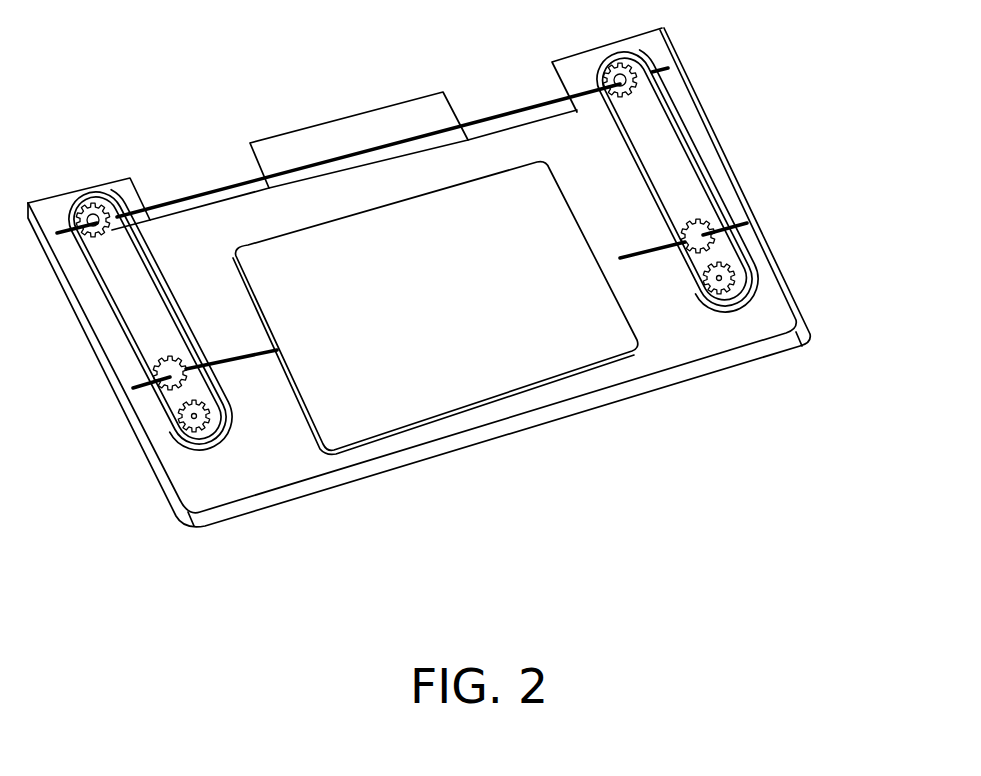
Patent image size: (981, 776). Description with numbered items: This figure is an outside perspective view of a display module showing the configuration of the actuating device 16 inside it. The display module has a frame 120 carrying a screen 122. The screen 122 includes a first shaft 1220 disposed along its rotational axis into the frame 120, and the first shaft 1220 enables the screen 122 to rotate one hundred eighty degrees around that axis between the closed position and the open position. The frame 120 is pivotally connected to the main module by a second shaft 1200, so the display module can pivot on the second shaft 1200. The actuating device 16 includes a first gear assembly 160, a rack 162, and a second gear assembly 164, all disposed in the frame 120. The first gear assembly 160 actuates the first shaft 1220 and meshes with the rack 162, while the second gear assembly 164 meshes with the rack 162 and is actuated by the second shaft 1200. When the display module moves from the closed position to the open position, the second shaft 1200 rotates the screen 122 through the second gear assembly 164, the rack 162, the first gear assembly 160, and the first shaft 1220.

The frame 120 is at (682, 356).
The screen 122 is at (573, 347).
The second shaft 1200 is at (478, 112).
The first shaft 1220 is at (275, 350).
The actuating device 16 is at (760, 181).
The first gear assembly 160 is at (759, 236).
The rack 162 is at (688, 162).
The second gear assembly 164 is at (667, 70).